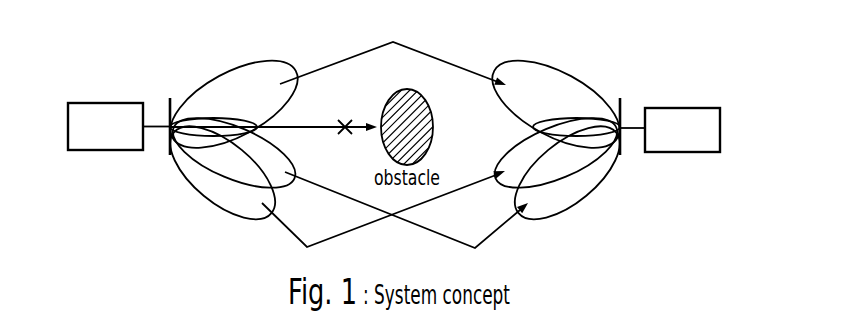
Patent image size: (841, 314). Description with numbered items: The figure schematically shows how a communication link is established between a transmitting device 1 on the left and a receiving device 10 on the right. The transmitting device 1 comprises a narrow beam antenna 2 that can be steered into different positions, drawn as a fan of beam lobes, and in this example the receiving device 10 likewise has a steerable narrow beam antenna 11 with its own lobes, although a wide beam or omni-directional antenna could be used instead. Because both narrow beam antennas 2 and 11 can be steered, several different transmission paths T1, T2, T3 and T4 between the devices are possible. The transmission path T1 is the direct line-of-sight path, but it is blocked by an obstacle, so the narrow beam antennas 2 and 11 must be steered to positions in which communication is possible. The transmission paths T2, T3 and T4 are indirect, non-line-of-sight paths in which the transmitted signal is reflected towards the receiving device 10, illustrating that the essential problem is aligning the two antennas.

The transmitting device 1 is at (102, 150).
The narrow beam antenna 2 is at (168, 155).
The receiving device 10 is at (685, 152).
The narrow beam antenna 11 is at (621, 155).
The transmission path T1 is at (302, 125).
The transmission path T2 is at (415, 48).
The transmission path T3 is at (318, 185).
The transmission path T4 is at (288, 228).